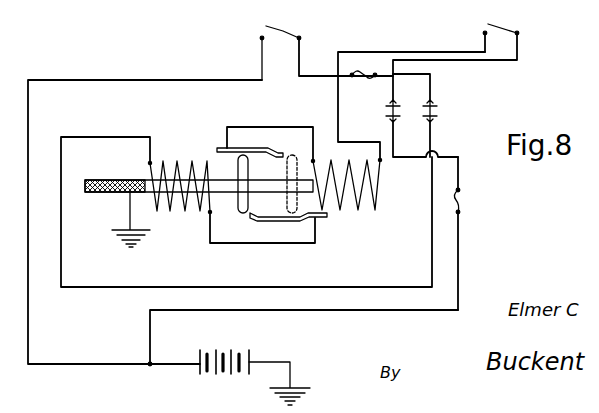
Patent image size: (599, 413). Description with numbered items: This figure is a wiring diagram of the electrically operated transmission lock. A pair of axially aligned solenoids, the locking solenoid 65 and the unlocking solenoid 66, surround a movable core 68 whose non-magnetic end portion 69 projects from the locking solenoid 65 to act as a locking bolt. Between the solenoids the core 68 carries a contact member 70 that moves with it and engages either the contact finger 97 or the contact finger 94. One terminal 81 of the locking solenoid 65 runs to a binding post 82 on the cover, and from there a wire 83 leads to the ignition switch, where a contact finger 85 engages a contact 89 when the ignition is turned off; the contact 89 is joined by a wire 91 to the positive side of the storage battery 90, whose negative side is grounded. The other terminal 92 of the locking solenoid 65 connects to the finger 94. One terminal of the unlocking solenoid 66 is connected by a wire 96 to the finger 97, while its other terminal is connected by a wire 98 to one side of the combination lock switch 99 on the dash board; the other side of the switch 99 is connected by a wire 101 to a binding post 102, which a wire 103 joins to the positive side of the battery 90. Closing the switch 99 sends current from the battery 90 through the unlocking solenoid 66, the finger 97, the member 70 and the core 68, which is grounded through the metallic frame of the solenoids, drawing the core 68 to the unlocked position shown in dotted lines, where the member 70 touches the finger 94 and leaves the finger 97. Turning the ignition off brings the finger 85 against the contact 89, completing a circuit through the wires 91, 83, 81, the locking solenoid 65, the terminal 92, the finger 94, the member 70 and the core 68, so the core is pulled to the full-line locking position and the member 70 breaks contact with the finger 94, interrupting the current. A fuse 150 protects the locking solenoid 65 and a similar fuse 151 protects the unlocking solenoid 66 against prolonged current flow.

The wire 91 is at (101, 79).
The terminal 81 is at (115, 137).
The locking solenoid 65 is at (183, 163).
The end portion 69 is at (124, 180).
The contact member 70 is at (238, 165).
The core 68 is at (211, 186).
The contact finger 94 is at (262, 219).
The terminal 92 is at (280, 243).
The wire 96 is at (281, 127).
The contact finger 97 is at (279, 149).
The unlocking solenoid 66 is at (380, 194).
The contact 89 is at (261, 37).
The contact finger 85 is at (284, 30).
The fuse 150 is at (366, 72).
The wire 98 is at (424, 50).
The binding post 102 is at (391, 103).
The wire 83 is at (431, 88).
The binding post 82 is at (438, 117).
The combination lock switch 99 is at (502, 27).
The wire 101 is at (492, 61).
The fuse 151 is at (462, 197).
The wire 103 is at (460, 258).
The storage battery 90 is at (198, 369).